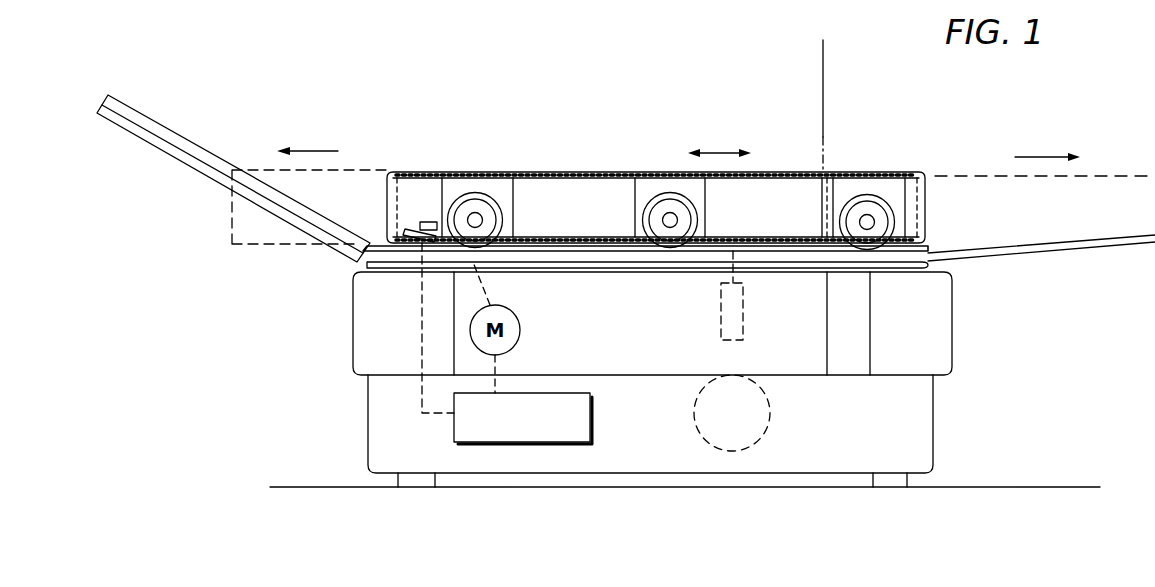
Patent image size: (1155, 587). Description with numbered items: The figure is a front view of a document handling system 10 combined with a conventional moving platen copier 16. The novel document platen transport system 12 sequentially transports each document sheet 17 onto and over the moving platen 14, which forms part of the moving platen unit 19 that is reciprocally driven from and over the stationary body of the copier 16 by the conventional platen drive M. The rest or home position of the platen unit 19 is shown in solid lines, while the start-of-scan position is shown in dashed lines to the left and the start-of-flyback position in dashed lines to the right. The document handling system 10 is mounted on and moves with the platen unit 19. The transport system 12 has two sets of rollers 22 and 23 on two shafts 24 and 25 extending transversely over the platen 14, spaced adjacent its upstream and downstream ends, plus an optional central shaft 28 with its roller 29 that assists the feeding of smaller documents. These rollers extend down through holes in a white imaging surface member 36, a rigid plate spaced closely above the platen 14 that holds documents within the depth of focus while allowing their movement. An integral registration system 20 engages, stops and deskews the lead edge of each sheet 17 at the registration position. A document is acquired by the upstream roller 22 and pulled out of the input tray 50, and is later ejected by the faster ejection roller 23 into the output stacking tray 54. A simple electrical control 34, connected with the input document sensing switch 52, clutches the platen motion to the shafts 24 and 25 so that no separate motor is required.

The document handling system 10 is at (642, 154).
The document platen transport system 12 is at (523, 194).
The moving platen 14 is at (420, 245).
The moving platen copier 16 is at (368, 408).
The document sheet 17 is at (588, 238).
The moving platen unit 19 is at (812, 190).
The registration system 20 is at (797, 212).
The upstream roller 22 is at (460, 197).
The ejection roller 23 is at (905, 200).
The shaft 24 is at (475, 218).
The shaft 25 is at (867, 222).
The central shaft 28 is at (698, 226).
The central roller 29 is at (699, 229).
The electrical control 34 is at (596, 430).
The imaging surface member 36 is at (545, 237).
The input tray 50 is at (213, 160).
The input document sensing switch 52 is at (423, 222).
The output stacking tray 54 is at (1034, 248).